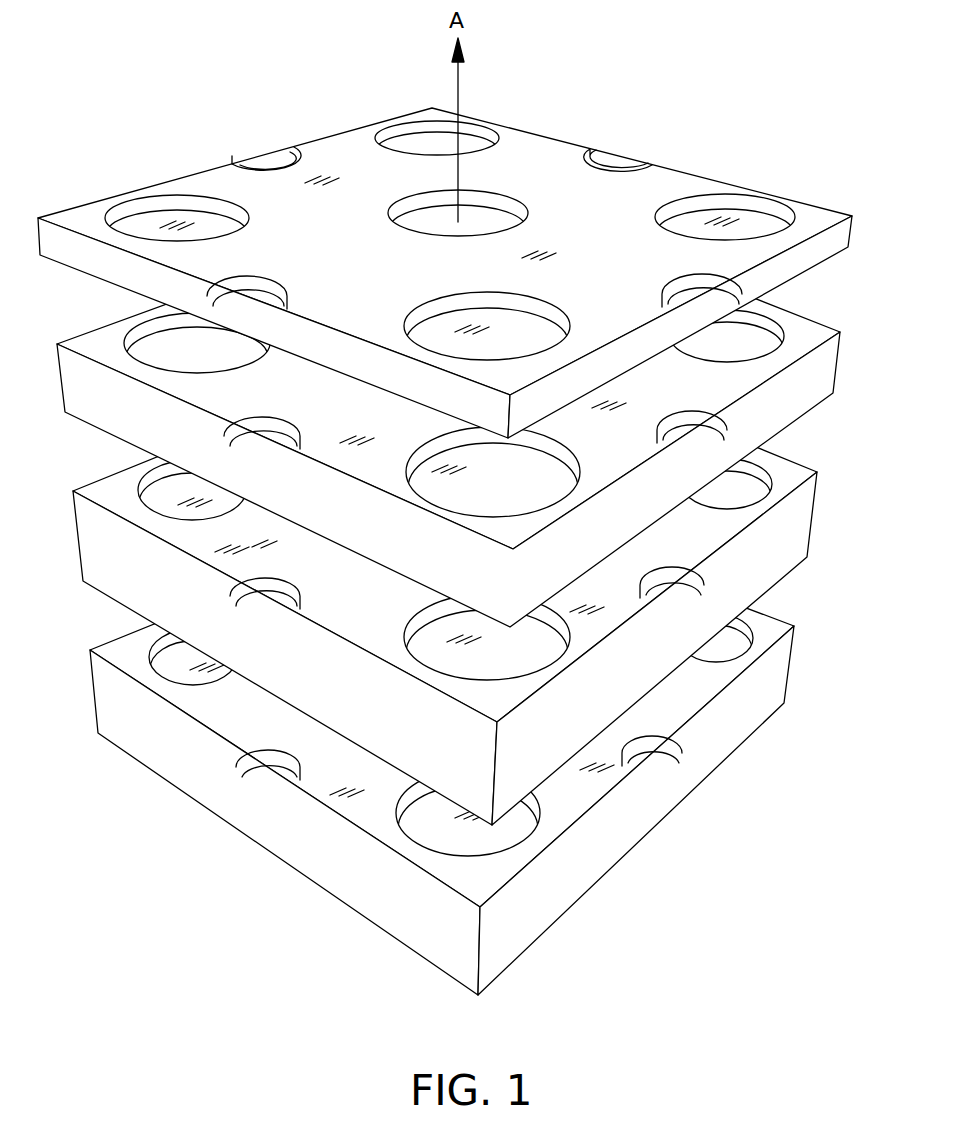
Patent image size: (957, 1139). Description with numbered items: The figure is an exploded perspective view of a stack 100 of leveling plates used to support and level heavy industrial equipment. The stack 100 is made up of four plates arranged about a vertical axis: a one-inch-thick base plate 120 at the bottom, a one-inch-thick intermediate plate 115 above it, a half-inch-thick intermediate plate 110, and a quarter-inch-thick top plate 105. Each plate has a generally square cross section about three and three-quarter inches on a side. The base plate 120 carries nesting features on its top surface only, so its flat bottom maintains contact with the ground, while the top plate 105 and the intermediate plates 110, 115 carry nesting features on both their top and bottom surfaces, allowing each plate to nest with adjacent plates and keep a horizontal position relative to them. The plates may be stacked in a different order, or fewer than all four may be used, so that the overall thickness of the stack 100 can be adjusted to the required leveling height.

The stack 100 is at (462, 530).
The top plate 105 is at (845, 234).
The intermediate plate 110 is at (832, 358).
The intermediate plate 115 is at (809, 506).
The base plate 120 is at (780, 668).